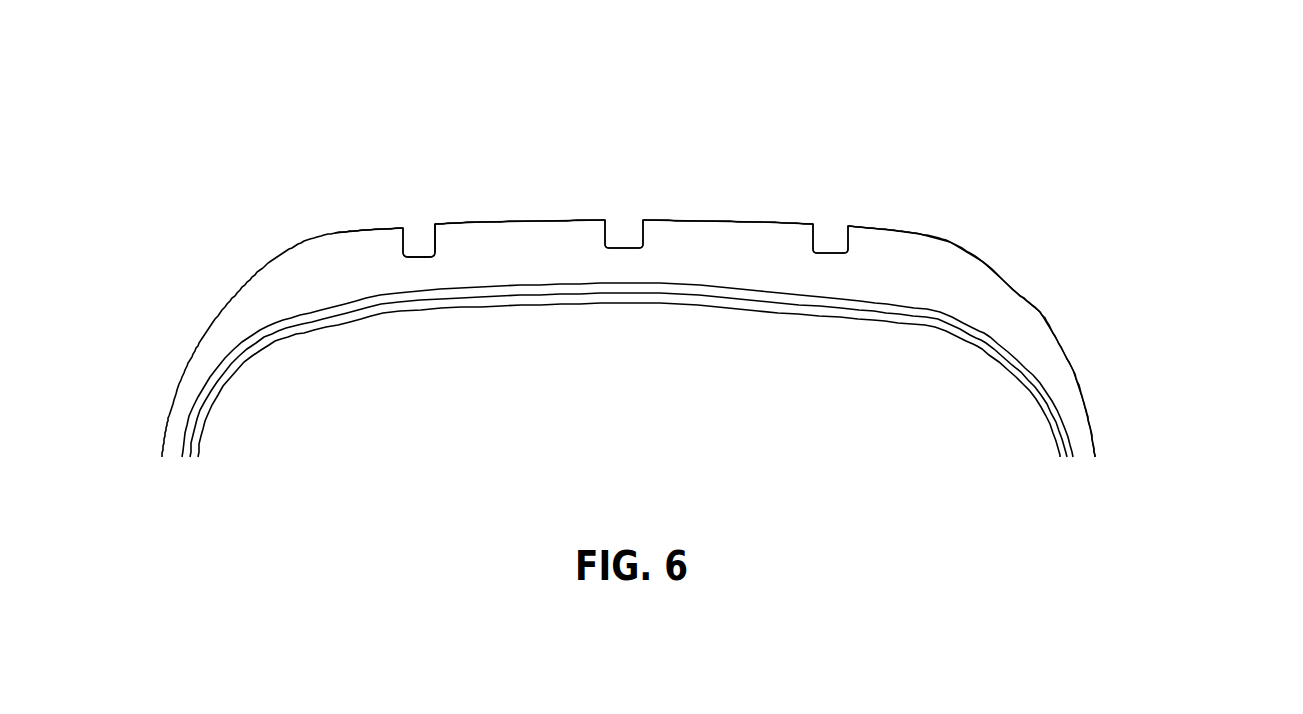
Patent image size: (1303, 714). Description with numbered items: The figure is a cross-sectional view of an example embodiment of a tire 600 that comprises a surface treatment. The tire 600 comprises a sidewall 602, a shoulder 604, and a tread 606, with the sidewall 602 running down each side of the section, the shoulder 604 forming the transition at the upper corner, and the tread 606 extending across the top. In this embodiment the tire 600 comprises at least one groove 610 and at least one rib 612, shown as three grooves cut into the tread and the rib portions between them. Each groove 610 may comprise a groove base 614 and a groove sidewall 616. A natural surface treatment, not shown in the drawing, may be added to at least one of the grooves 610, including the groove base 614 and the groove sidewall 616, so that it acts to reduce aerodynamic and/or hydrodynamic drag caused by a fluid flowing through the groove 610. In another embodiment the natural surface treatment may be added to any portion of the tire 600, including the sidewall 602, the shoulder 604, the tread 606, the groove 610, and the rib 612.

The tire 600 is at (296, 121).
The sidewall 602 is at (1097, 447).
The shoulder 604 is at (1042, 312).
The tread 606 is at (540, 231).
The groove 610 is at (414, 206).
The rib 612 is at (365, 242).
The groove base 614 is at (425, 257).
The groove sidewall 616 is at (437, 237).